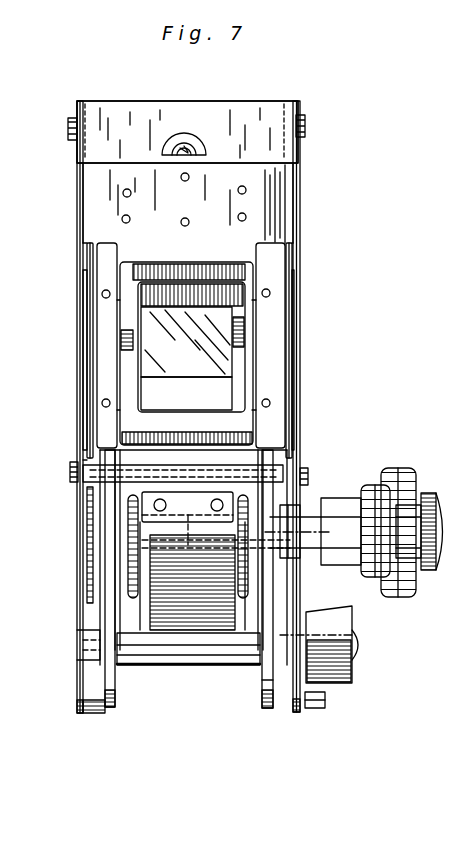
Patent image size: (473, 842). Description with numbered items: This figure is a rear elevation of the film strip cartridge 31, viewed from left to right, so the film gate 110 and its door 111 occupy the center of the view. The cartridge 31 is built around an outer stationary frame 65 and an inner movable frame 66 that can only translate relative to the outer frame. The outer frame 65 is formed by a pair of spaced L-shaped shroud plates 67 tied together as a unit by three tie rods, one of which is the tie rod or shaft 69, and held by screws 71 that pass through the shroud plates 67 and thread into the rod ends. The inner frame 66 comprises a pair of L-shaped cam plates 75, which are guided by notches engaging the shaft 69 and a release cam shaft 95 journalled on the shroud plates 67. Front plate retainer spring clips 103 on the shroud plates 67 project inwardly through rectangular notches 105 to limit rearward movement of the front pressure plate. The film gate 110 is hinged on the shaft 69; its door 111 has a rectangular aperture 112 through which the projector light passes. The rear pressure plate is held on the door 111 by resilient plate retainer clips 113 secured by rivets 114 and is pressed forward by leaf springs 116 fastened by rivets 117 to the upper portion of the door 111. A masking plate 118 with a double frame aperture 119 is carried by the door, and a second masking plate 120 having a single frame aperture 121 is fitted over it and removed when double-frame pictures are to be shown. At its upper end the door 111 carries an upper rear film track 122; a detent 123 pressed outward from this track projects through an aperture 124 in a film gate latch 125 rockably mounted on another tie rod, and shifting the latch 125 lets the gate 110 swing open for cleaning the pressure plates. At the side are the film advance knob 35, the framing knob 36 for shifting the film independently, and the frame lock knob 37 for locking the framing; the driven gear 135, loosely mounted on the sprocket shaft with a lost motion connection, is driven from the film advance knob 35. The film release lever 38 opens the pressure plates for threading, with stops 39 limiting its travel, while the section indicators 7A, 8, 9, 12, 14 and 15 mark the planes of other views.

The section line 7A- 7A is at (72, 369).
The section line 8- 8 is at (264, 78).
The section line 9- 9 is at (164, 83).
The section line 12- 12 is at (122, 78).
The section line 14- 14 is at (89, 100).
The section line 15- 15 is at (13, 576).
The film strip cartridge 31 is at (353, 79).
The film advance knob 35 is at (402, 472).
The framing knob 36 is at (370, 492).
The frame lock knob 37 is at (437, 497).
The film release lever 38 is at (352, 620).
The stops 39 is at (325, 698).
The outer stationary frame 65 is at (339, 147).
The inner movable frame 66 is at (172, 678).
The L-shaped shroud plates 67 is at (78, 193).
The tie rod or shaft 69 is at (288, 470).
The screws 71 is at (68, 128).
The L-shaped cam plates 75 is at (110, 707).
The release cam shaft 95 is at (80, 636).
The front plate retainer spring clips 103 is at (84, 310).
The rectangular notches 105 is at (86, 262).
The film gate 110 is at (120, 157).
The door 111 is at (290, 183).
The rectangular aperture 112 is at (218, 268).
The resilient plate retainer clips 113 is at (97, 335).
The rivets 114 is at (102, 292).
The leaf springs 116 is at (125, 303).
The rivets 117 is at (122, 216).
The masking plate 118 is at (147, 268).
The double frame aperture 119 is at (182, 289).
The second masking plate 120 is at (222, 385).
The single frame aperture 121 is at (217, 357).
The upper rear film track 122 is at (182, 218).
The detent 123 is at (214, 151).
The aperture 124 is at (196, 141).
The film gate latch 125 is at (251, 110).
The driven gear 135 is at (90, 586).